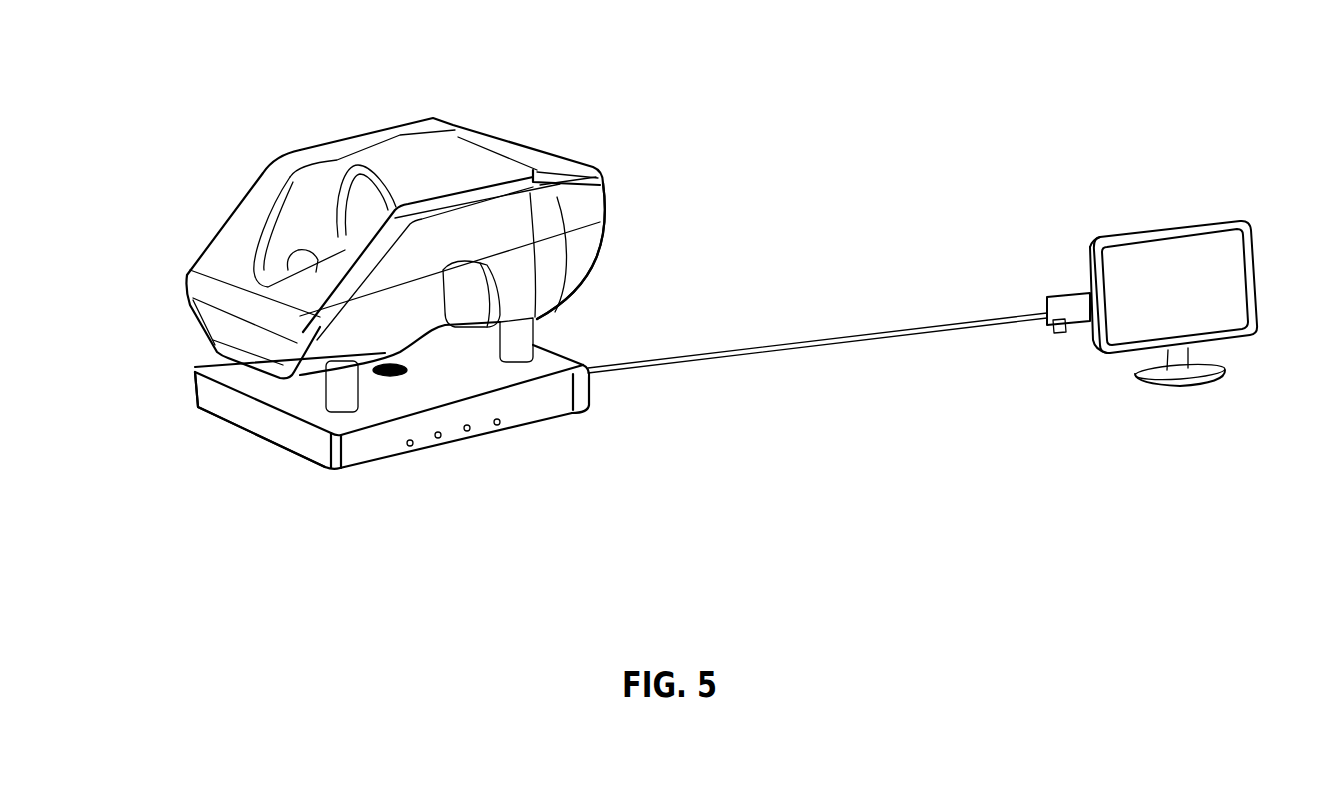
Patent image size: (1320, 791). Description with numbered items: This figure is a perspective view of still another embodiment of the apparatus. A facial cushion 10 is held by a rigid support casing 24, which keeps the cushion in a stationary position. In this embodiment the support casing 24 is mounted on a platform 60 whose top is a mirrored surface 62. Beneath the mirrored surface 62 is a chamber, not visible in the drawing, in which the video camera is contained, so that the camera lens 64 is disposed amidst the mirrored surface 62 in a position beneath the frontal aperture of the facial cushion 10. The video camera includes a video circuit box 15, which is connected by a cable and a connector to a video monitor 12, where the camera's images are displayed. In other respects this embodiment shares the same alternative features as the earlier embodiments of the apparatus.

The facial cushion 10 is at (567, 160).
The video monitor 12 is at (1205, 250).
The video circuit box 15 is at (1065, 332).
The support casing 24 is at (598, 234).
The platform 60 is at (218, 400).
The mirrored surface 62 is at (297, 397).
The camera lens 64 is at (399, 378).